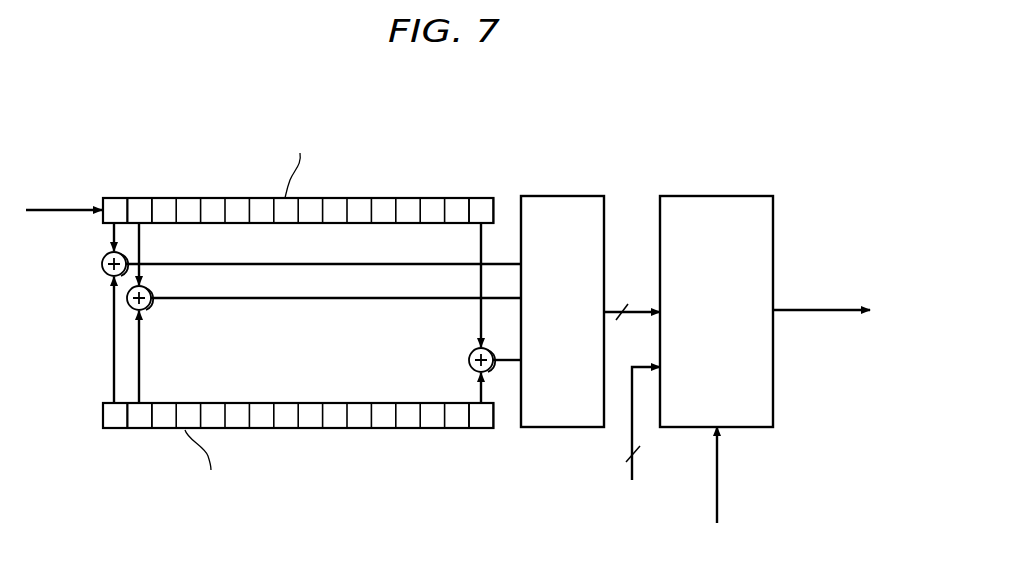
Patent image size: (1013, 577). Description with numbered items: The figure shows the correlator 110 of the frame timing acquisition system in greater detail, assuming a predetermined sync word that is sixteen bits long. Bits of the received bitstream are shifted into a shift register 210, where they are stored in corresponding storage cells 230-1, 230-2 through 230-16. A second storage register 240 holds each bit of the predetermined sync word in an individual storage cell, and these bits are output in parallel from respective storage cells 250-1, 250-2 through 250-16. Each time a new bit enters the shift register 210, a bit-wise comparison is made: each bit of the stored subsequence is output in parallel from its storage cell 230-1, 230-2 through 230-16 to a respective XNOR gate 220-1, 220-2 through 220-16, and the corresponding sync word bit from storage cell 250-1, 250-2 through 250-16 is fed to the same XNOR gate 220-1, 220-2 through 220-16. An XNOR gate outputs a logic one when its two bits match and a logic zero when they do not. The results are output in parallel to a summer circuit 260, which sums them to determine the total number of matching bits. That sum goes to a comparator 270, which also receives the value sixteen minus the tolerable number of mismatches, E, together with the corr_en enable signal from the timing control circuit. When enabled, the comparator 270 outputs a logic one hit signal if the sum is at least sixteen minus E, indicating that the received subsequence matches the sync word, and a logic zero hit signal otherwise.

The correlator 110 is at (672, 102).
The shift register 210 is at (493, 206).
The storage cell 230-1 is at (116, 198).
The storage cell 230-2 is at (137, 198).
The storage cell 230-16 is at (478, 198).
The XNOR gate 220-1 is at (102, 261).
The XNOR gate 220-2 is at (149, 306).
The XNOR gate 220-16 is at (469, 358).
The second storage register 240 is at (103, 412).
The storage cell 250-1 is at (112, 430).
The storage cell 250-2 is at (140, 430).
The storage cell 250-16 is at (481, 430).
The summer circuit 260 is at (564, 196).
The comparator 270 is at (718, 196).